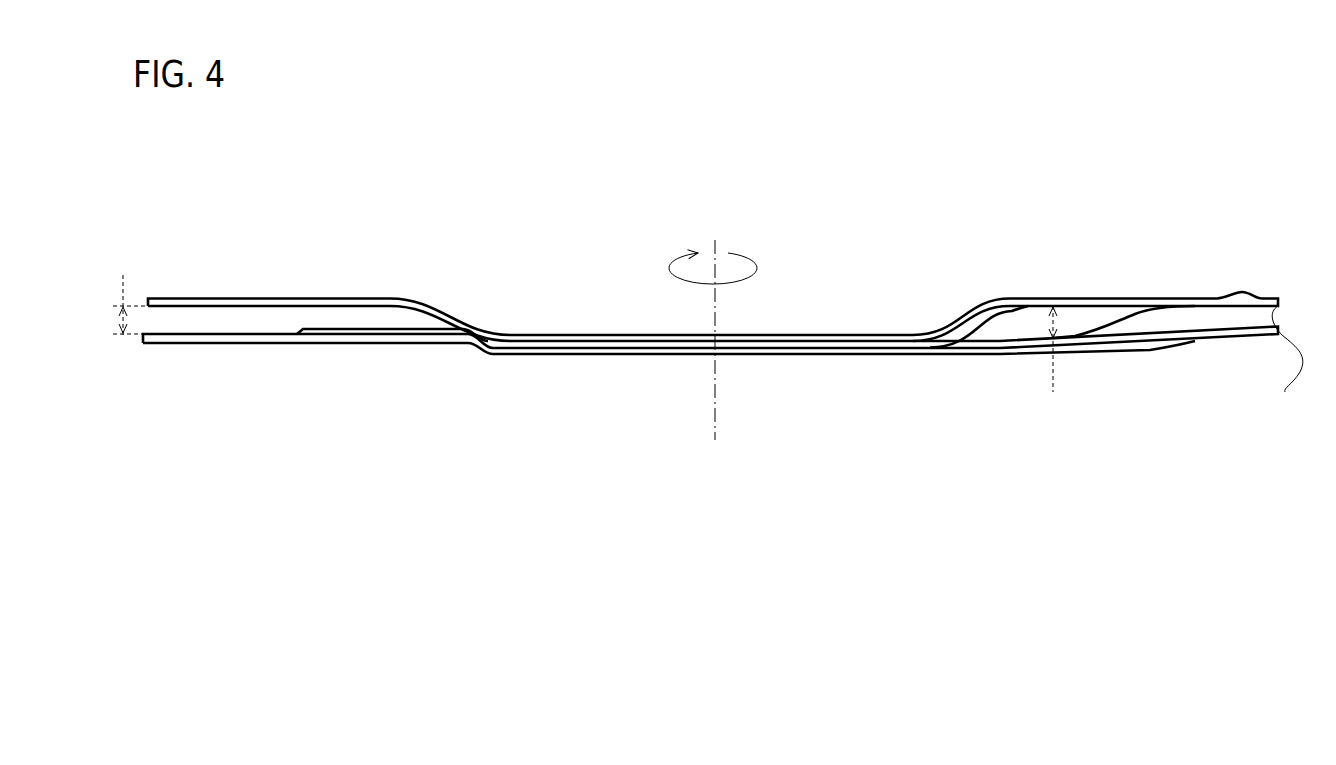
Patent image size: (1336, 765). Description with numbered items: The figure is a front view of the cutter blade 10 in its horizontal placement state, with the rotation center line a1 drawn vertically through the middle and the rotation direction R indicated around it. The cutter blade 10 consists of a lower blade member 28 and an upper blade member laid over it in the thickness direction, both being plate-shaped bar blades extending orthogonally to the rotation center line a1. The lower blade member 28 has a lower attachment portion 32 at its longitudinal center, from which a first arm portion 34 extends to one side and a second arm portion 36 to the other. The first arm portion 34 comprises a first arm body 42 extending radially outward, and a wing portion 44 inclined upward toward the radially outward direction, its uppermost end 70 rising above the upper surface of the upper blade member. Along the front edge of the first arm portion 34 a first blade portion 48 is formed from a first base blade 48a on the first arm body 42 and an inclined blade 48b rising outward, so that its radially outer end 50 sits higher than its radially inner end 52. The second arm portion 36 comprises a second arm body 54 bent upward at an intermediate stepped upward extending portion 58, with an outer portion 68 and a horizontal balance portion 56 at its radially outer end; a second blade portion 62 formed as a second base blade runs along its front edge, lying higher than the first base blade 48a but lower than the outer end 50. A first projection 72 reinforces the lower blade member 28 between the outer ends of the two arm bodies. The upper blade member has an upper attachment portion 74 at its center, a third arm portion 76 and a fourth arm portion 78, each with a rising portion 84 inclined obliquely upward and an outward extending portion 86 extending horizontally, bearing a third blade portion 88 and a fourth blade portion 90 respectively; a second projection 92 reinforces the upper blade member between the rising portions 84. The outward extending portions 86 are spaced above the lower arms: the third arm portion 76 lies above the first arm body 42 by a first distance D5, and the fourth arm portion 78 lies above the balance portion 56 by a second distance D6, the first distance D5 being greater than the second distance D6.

In FIG. 4, the cutter blade 10 is at (193, 154).
In FIG. 4, the lower blade member 28 is at (152, 346).
In FIG. 4, the lower attachment portion 32 is at (587, 353).
In FIG. 4, the first arm portion 34 is at (1038, 355).
In FIG. 4, the second arm portion 36 is at (267, 346).
In FIG. 4, the first arm body 42 is at (962, 342).
In FIG. 4, the wing portion 44 is at (1208, 320).
In FIG. 4, the first blade portion 48 is at (1130, 345).
In FIG. 4, the first base blade 48a is at (1012, 353).
In FIG. 4, the inclined blade 48b is at (1173, 345).
The radially outer end of the first blade portion 50 is at (1285, 392).
In FIG. 4, the radially inner end of the first blade portion 52 is at (972, 355).
In FIG. 4, the second arm body 54 is at (497, 352).
In FIG. 4, the balance portion 56 is at (180, 344).
In FIG. 4, the upward extending portion 58 is at (472, 352).
In FIG. 4, the second blade portion 62 is at (235, 344).
In FIG. 4, the outer portion 68 is at (212, 346).
In FIG. 4, the uppermost end of the wing portion 70 is at (1242, 292).
In FIG. 4, the first projection 72 is at (362, 328).
In FIG. 4, the upper attachment portion 74 is at (603, 340).
In FIG. 4, the third arm portion 76 is at (995, 296).
In FIG. 4, the fourth arm portion 78 is at (312, 293).
In FIG. 4, the rising portion 84 is at (440, 307).
In FIG. 4, the outward extending portion 86 is at (250, 297).
In FIG. 4, the third blade portion 88 is at (1115, 297).
In FIG. 4, the fourth blade portion 90 is at (173, 297).
In FIG. 4, the second projection 92 is at (757, 334).
In FIG. 4, the rotation center line a1 is at (706, 328).
In FIG. 4, the rotation direction R is at (706, 268).
The second distance D6 is at (123, 305).
The first distance D5 is at (1064, 350).